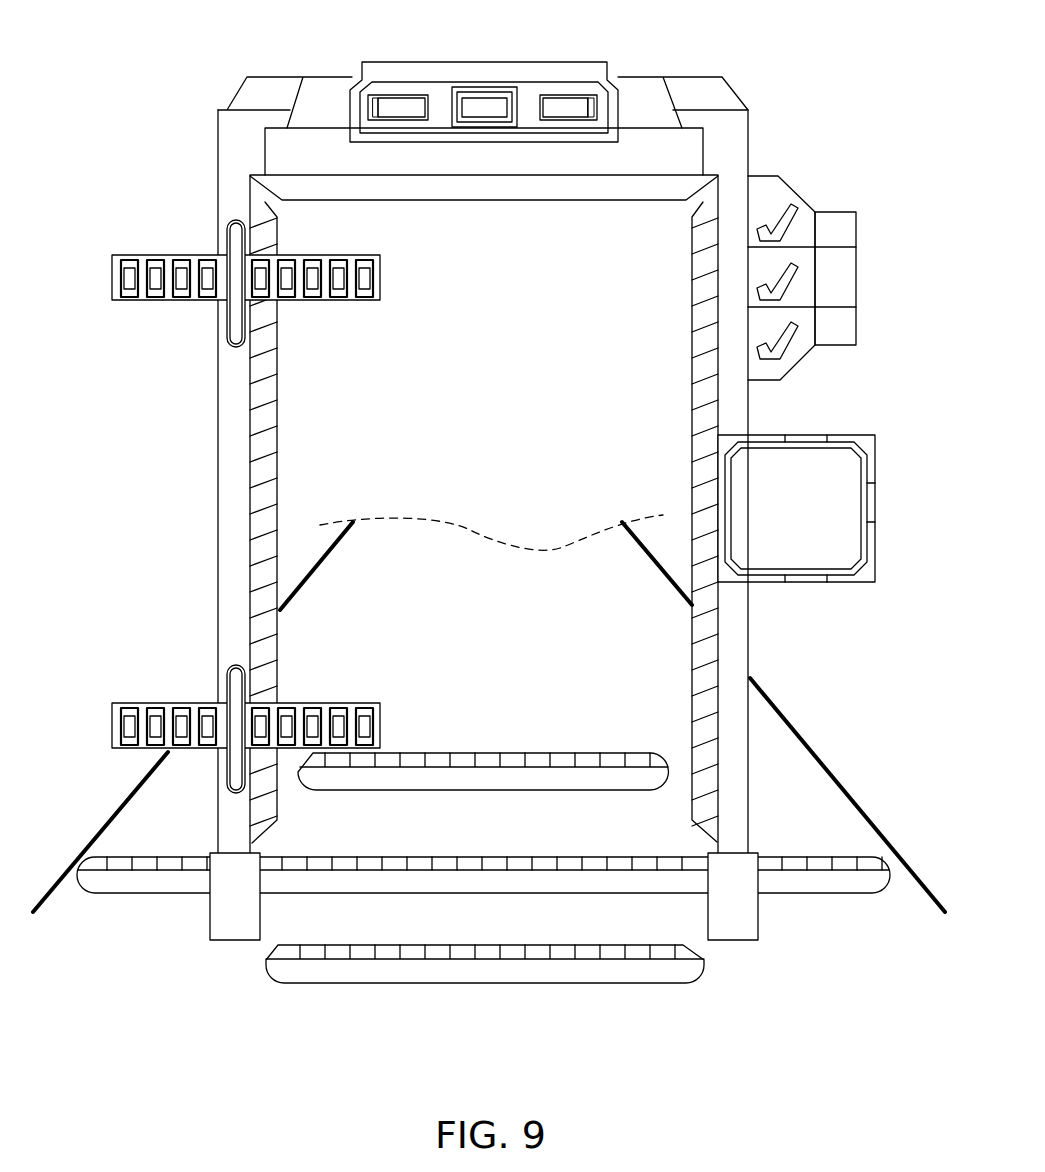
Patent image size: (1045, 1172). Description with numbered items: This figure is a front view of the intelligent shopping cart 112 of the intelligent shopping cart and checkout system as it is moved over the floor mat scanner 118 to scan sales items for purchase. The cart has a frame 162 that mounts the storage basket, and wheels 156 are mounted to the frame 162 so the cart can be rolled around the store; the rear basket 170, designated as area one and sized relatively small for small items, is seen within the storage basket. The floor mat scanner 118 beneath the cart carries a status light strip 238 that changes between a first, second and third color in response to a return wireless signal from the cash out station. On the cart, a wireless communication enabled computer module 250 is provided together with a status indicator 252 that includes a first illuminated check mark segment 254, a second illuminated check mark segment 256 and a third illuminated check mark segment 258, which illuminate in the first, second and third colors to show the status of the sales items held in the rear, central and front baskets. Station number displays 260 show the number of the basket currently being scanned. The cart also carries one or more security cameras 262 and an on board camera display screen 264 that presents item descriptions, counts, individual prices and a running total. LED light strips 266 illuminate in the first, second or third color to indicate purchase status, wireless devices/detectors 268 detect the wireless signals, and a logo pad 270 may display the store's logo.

The intelligent shopping cart 112 is at (146, 62).
The floor mat scanner 118 is at (492, 802).
The wheels 156 is at (232, 922).
The frame 162 is at (232, 482).
The rear basket 170 is at (508, 427).
The status light strip 238 is at (495, 760).
The computer module 250 is at (307, 148).
The status indicator 252 is at (770, 168).
The first illuminated check mark segment 254 is at (795, 350).
The second illuminated check mark segment 256 is at (805, 262).
The third illuminated check mark segment 258 is at (780, 197).
The station number displays 260 is at (627, 78).
The security cameras 262 is at (485, 103).
The camera display screen 264 is at (832, 495).
The LED light strips 266 is at (143, 292).
The wireless devices/detectors 268 is at (262, 570).
The logo pad 270 is at (317, 95).